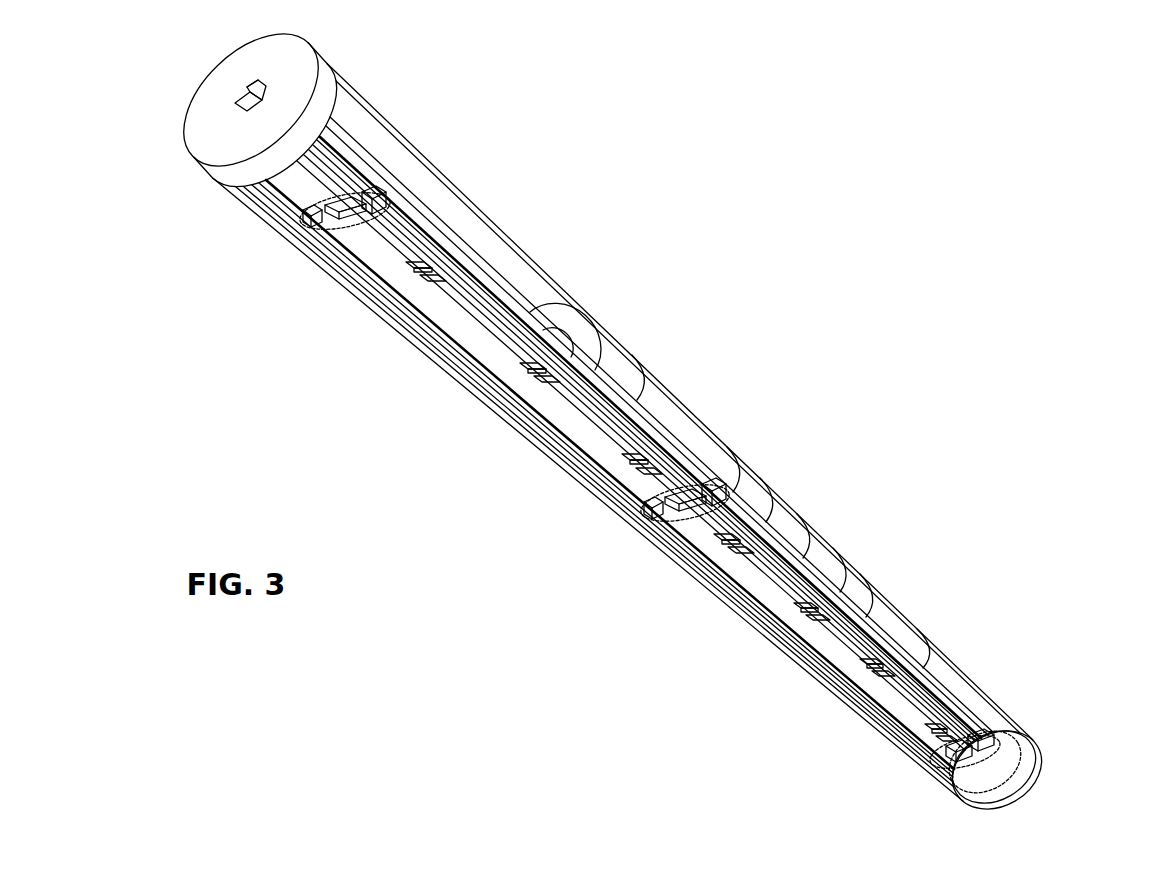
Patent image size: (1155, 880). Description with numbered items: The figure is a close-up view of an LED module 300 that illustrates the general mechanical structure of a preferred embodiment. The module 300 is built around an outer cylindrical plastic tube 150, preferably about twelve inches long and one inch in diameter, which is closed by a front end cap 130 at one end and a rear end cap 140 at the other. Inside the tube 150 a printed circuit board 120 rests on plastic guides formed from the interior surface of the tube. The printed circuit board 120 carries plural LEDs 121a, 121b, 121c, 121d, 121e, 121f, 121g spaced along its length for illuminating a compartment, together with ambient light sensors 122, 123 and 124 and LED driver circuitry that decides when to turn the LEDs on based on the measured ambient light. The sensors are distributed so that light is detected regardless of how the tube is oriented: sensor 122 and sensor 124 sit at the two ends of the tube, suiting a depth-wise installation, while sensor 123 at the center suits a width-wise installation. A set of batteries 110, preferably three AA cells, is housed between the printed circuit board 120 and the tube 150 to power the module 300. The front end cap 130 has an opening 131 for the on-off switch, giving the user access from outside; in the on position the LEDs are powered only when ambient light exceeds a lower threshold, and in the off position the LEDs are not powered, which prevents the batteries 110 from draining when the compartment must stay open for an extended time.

The LED module 300 is at (866, 244).
The set of batteries 110 is at (667, 410).
The printed circuit board 120 is at (470, 320).
The LED 121a is at (424, 283).
The LED 121b is at (541, 386).
The LED 121c is at (639, 471).
The LED 121d is at (729, 555).
The LED 121e is at (808, 621).
The LED 121f is at (873, 678).
The LED 121g is at (937, 743).
The ambient light sensor 122 is at (367, 183).
The ambient light sensor 123 is at (683, 493).
The ambient light sensor 124 is at (968, 737).
The front end cap 130 is at (220, 77).
The opening 131 is at (240, 107).
The rear end cap 140 is at (1036, 760).
The outer cylindrical plastic tube 150 is at (462, 194).